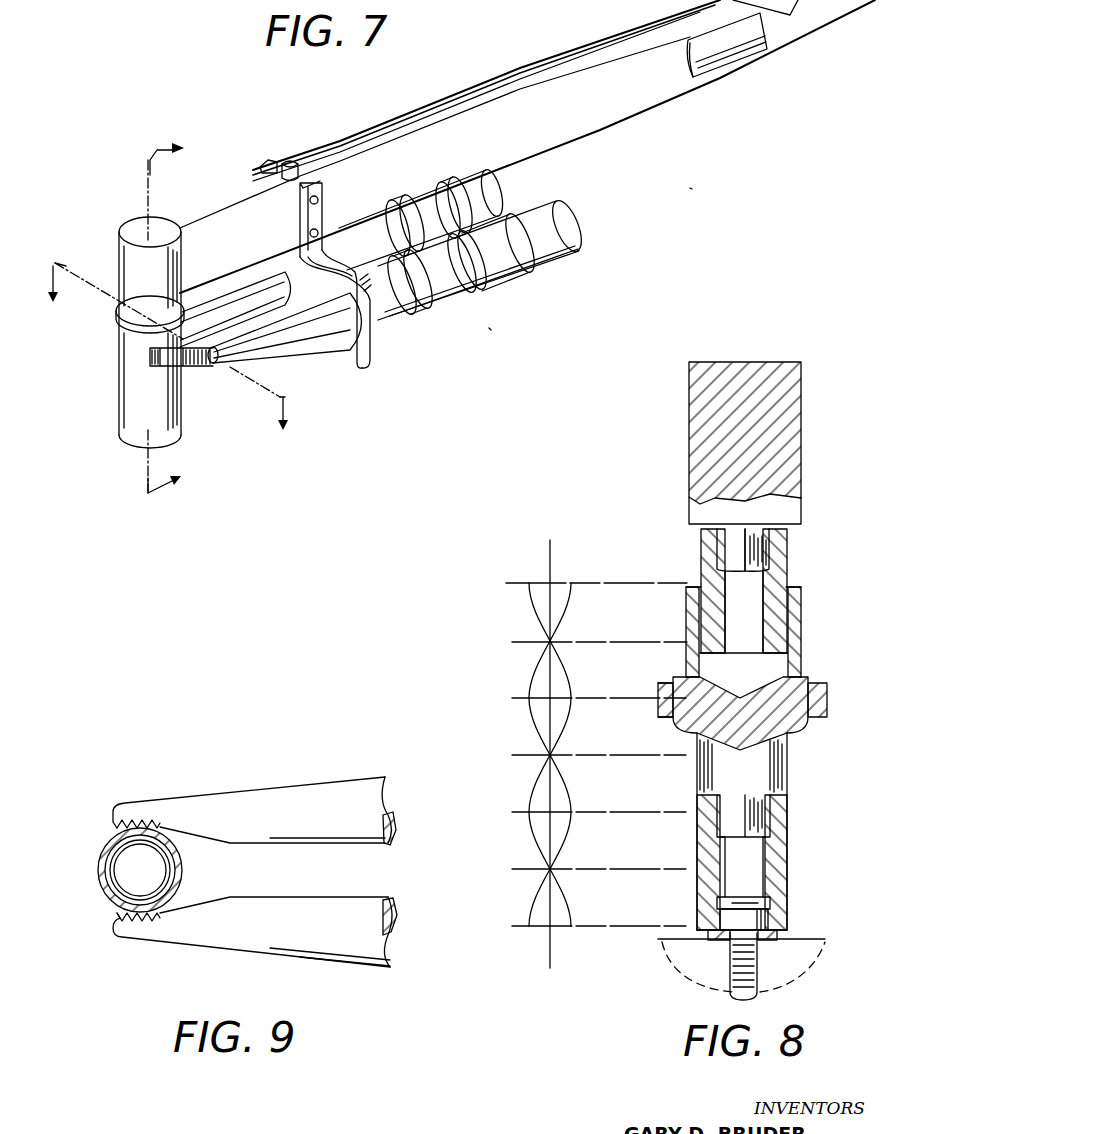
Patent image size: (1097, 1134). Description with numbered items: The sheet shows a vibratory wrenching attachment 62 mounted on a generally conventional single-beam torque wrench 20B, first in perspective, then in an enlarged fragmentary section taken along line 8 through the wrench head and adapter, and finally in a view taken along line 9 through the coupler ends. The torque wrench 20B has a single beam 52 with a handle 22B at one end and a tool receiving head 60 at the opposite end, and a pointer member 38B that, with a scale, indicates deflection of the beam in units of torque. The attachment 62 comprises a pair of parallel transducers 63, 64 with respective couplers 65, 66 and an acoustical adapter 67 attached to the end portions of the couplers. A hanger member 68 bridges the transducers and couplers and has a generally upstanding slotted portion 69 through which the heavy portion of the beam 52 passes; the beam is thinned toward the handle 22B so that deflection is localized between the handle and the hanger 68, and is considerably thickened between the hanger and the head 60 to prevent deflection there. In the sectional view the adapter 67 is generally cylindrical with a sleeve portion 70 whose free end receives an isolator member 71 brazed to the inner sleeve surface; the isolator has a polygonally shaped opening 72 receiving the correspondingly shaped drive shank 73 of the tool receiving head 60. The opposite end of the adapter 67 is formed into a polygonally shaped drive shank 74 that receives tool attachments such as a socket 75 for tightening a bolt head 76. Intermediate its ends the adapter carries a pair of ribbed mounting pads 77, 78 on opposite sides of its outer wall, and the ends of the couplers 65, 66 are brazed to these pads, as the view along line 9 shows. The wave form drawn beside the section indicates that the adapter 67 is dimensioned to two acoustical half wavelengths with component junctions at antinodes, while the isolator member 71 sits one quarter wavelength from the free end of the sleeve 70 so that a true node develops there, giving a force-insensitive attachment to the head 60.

In FIG. 7, the torque wrench 20B is at (687, 184).
In FIG. 7, the handle 22B is at (784, 38).
In FIG. 7, the pointer member 38B is at (548, 62).
In FIG. 7, the single beam 52 is at (698, 82).
In FIG. 7, the tool receiving head 60 is at (130, 227).
In FIG. 8, the tool receiving head 60 is at (803, 395).
In FIG. 7, the vibratory wrenching attachment 62 is at (486, 325).
In FIG. 7, the transducer 63 is at (565, 254).
In FIG. 7, the transducer 64 is at (495, 193).
In FIG. 7, the coupler 65 is at (280, 353).
In FIG. 8, the coupler 65 is at (826, 684).
In FIG. 9, the coupler 65 is at (313, 957).
In FIG. 7, the coupler 66 is at (228, 308).
In FIG. 8, the coupler 66 is at (680, 683).
In FIG. 9, the coupler 66 is at (307, 787).
In FIG. 7, the acoustical adapter 67 is at (111, 373).
In FIG. 8, the acoustical adapter 67 is at (836, 733).
In FIG. 9, the acoustical adapter 67 is at (93, 867).
In FIG. 7, the hanger member 68 is at (365, 368).
In FIG. 7, the slotted portion 69 is at (296, 207).
In FIG. 8, the sleeve portion 70 is at (802, 626).
In FIG. 9, the sleeve portion 70 is at (182, 865).
In FIG. 8, the isolator member 71 is at (789, 571).
In FIG. 8, the polygonally shaped opening 72 is at (772, 543).
In FIG. 8, the drive shank 73 is at (730, 545).
In FIG. 8, the drive shank 74 is at (760, 812).
In FIG. 8, the socket 75 is at (789, 871).
In FIG. 8, the bolt head 76 is at (742, 923).
In FIG. 8, the mounting pad 77 is at (793, 731).
In FIG. 9, the mounting pad 77 is at (123, 909).
In FIG. 8, the mounting pad 78 is at (678, 722).
In FIG. 9, the mounting pad 78 is at (122, 830).
In FIG. 7, the section line 8— 8 is at (205, 162).
In FIG. 7, the section line 9— 9 is at (62, 333).